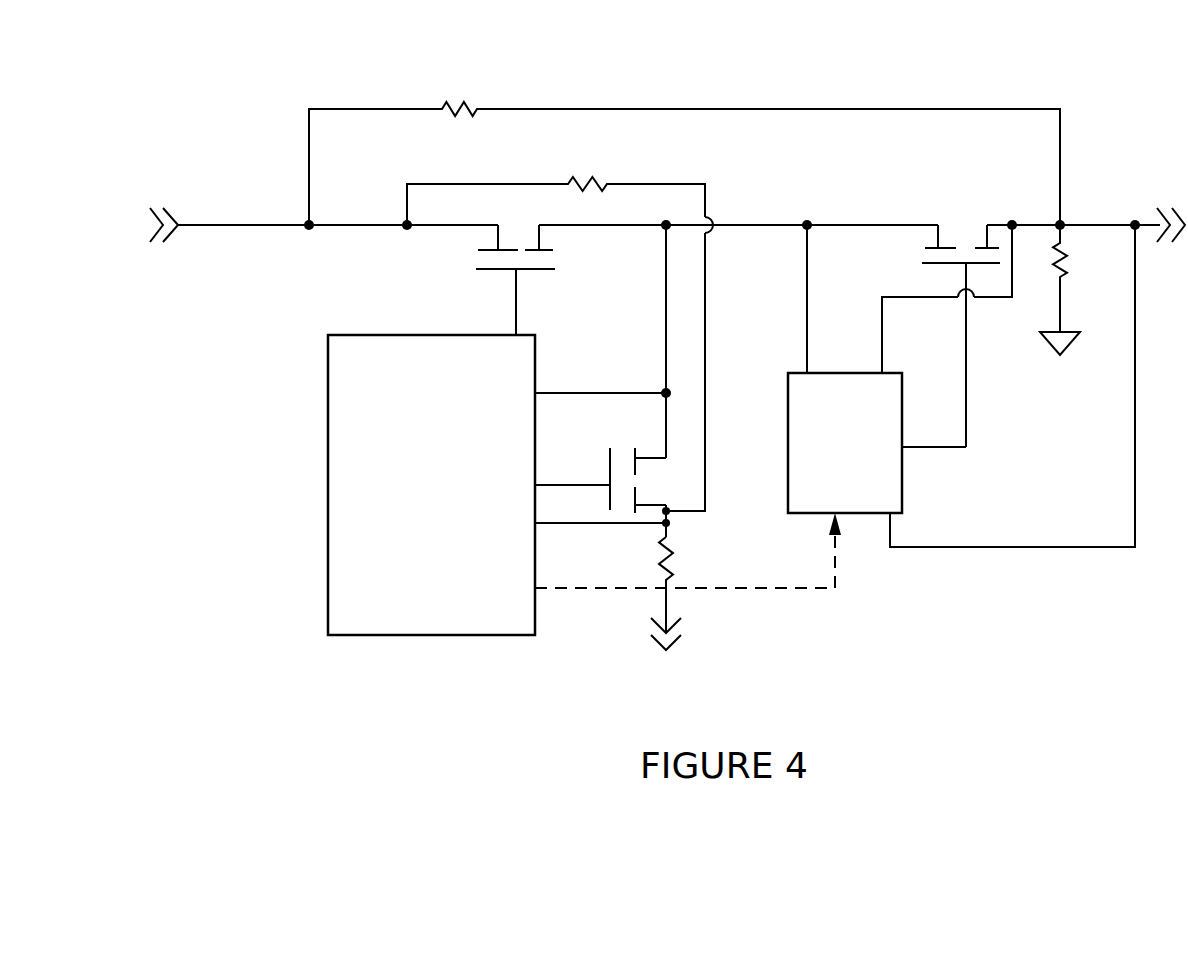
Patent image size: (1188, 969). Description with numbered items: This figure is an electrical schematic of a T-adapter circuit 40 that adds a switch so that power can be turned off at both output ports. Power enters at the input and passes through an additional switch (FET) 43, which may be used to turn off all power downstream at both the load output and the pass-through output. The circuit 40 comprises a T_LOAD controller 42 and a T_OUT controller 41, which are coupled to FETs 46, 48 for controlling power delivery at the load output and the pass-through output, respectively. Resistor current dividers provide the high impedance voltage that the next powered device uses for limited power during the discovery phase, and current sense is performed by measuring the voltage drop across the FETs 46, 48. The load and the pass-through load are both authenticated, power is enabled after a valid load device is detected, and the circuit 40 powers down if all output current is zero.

The T-adapter circuit 40 is at (786, 82).
The T_OUT controller 41 is at (788, 401).
The T_LOAD controller 42 is at (328, 402).
The additional switch (FET) 43 is at (487, 271).
The FET 46 is at (610, 485).
The FET 48 is at (935, 265).